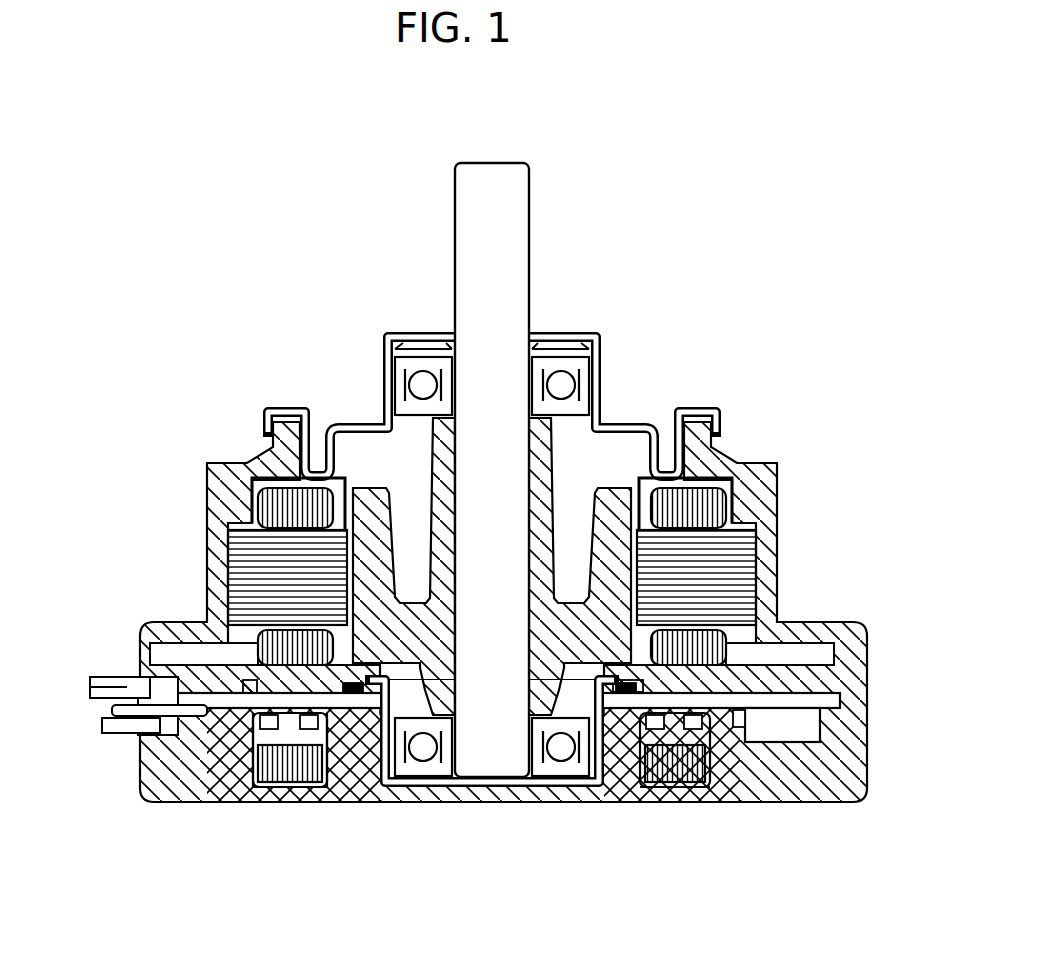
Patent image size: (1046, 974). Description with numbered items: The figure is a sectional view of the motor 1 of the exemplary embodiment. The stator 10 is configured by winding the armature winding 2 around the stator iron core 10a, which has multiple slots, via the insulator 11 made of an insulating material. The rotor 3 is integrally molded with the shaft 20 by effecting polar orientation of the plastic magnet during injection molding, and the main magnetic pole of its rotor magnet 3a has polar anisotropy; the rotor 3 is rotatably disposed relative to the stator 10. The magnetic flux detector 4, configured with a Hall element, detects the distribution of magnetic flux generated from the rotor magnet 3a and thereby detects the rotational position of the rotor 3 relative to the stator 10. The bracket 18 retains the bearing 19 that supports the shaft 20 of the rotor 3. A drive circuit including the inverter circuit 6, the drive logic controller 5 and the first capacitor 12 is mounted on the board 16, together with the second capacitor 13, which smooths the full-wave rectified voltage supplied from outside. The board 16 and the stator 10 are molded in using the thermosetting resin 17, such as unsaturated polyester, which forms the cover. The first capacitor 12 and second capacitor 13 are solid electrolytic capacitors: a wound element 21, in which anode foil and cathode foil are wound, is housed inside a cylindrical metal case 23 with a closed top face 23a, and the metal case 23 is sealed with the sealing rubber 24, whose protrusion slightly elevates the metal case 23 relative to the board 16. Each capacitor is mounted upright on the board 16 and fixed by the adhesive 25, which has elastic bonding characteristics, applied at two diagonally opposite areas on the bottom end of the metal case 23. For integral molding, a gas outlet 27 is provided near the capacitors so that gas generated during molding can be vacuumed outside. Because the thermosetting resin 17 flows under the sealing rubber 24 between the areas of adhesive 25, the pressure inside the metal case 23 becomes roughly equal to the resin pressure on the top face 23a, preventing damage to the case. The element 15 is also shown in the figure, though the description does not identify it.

The motor 1 is at (539, 577).
The armature winding 2 is at (765, 513).
The rotor 3 is at (501, 434).
The rotor magnet 3a is at (612, 510).
The shaft 20 is at (492, 165).
The magnetic flux detector 4 is at (548, 784).
The drive logic controller 5 is at (790, 787).
The inverter circuit 6 is at (802, 733).
The stator 10 is at (765, 551).
The stator iron core 10a is at (745, 583).
The insulator 11 is at (735, 515).
The first capacitor 12 is at (628, 695).
The second capacitor 13 is at (494, 827).
The terminal 15 is at (135, 705).
The board 16 is at (800, 700).
The thermosetting resin 17 is at (848, 745).
The bracket 18 is at (348, 430).
The bearing 19 is at (566, 385).
The wound element 21 is at (290, 768).
The metal case 23 is at (335, 775).
The top face 23a is at (252, 748).
The sealing rubber 24 is at (270, 750).
The adhesive 25 is at (245, 712).
The gas outlet 27 is at (283, 780).